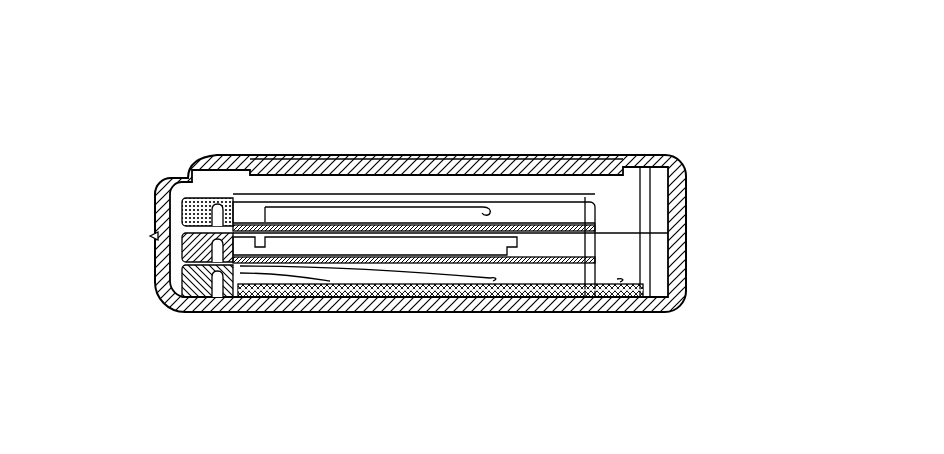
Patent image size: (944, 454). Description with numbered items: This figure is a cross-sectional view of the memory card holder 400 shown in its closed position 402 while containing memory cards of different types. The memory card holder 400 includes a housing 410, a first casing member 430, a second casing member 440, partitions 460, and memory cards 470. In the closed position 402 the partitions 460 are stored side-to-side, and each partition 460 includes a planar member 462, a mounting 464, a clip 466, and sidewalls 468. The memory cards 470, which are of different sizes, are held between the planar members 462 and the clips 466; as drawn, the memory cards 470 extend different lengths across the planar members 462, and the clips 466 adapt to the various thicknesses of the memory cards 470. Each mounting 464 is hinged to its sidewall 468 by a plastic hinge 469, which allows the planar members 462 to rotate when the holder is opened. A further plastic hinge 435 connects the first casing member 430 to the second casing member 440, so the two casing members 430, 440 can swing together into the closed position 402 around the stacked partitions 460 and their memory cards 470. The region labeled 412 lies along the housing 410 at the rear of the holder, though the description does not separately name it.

The memory card holder 400 is at (141, 86).
The closed position 402 is at (752, 181).
The housing 410 is at (473, 160).
The top wall rear portion 412 is at (643, 158).
The first casing member 430 is at (677, 180).
The second casing member 440 is at (677, 282).
The partitions 460 is at (590, 262).
The planar member 462 is at (603, 210).
The mounting 464 is at (180, 212).
The clip 466 is at (300, 228).
The sidewalls 468 is at (245, 210).
The plastic hinge 469 is at (218, 195).
The memory cards 470 is at (517, 245).
The plastic hinge 435 is at (150, 236).